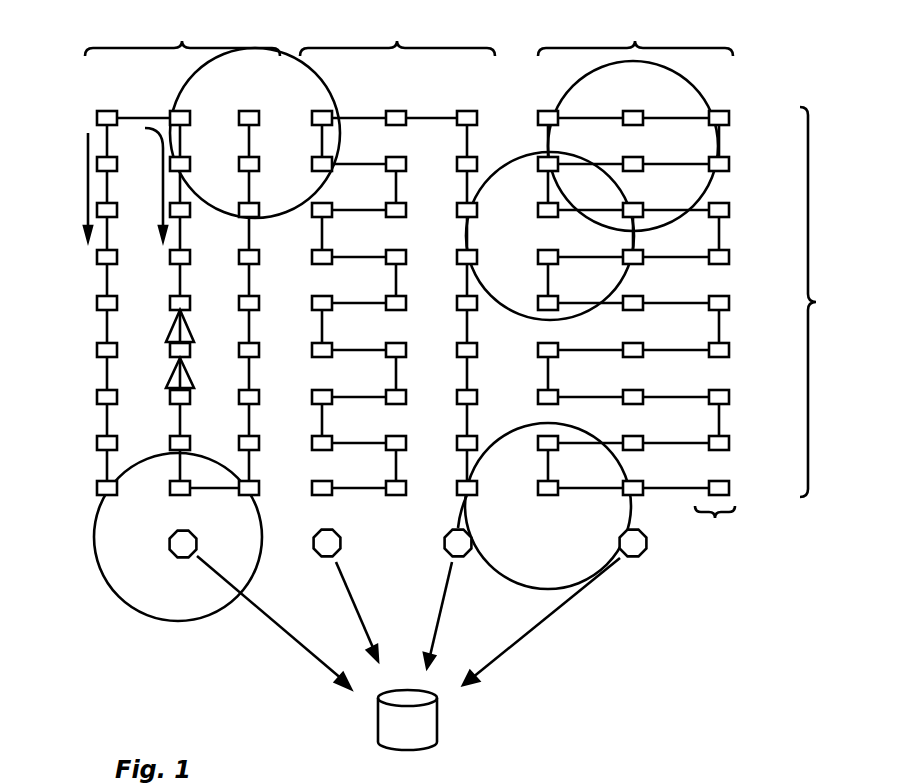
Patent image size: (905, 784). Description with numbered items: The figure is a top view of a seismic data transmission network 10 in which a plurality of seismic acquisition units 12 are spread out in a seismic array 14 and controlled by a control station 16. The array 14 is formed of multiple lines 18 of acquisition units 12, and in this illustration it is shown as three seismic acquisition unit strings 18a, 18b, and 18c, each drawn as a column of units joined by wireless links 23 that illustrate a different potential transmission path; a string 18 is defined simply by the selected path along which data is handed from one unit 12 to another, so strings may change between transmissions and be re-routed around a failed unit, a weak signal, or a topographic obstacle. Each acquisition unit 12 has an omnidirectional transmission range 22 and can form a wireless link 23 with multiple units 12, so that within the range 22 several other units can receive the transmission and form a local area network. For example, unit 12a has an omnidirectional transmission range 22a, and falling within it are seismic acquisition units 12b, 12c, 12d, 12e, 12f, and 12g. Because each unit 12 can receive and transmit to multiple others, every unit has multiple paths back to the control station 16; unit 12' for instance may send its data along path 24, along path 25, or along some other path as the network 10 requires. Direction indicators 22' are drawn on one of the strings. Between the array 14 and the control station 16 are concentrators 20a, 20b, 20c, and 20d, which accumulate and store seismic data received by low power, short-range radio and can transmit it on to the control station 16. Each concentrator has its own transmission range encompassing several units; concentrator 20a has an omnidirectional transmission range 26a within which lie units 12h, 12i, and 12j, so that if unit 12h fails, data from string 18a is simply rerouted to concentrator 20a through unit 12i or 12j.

The seismic data transmission network 10 is at (440, 375).
The seismic acquisition unit 12 is at (444, 300).
The seismic acquisition unit 12' is at (76, 117).
The seismic acquisition unit 12a is at (253, 110).
The seismic acquisition unit 12b is at (182, 110).
The seismic acquisition unit 12c is at (182, 157).
The seismic acquisition unit 12d is at (258, 217).
The seismic acquisition unit 12e is at (333, 158).
The seismic acquisition unit 12f is at (333, 110).
The seismic acquisition unit 12g is at (258, 157).
The seismic acquisition unit 12h is at (97, 490).
The seismic acquisition unit 12i is at (172, 490).
The seismic acquisition unit 12j is at (240, 494).
The seismic array 14 is at (440, 335).
The control station 16 is at (449, 720).
The line of acquisition units 18 is at (715, 529).
The seismic acquisition unit string 18a is at (182, 34).
The seismic acquisition unit string 18b is at (397, 37).
The seismic acquisition unit string 18c is at (635, 36).
The concentrator 20a is at (172, 556).
The concentrator 20b is at (342, 540).
The concentrator 20c is at (444, 548).
The concentrator 20d is at (642, 553).
The omnidirectional transmission range 22 is at (624, 348).
The direction indicator 22' is at (157, 350).
The omnidirectional transmission range 22a is at (281, 57).
The wireless link 23 is at (107, 465).
The path 24 is at (86, 173).
The path 25 is at (163, 183).
The omnidirectional transmission range 26a is at (143, 612).